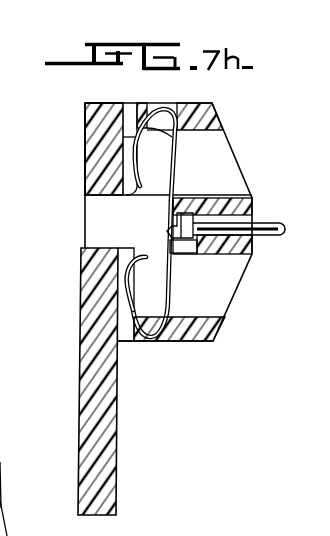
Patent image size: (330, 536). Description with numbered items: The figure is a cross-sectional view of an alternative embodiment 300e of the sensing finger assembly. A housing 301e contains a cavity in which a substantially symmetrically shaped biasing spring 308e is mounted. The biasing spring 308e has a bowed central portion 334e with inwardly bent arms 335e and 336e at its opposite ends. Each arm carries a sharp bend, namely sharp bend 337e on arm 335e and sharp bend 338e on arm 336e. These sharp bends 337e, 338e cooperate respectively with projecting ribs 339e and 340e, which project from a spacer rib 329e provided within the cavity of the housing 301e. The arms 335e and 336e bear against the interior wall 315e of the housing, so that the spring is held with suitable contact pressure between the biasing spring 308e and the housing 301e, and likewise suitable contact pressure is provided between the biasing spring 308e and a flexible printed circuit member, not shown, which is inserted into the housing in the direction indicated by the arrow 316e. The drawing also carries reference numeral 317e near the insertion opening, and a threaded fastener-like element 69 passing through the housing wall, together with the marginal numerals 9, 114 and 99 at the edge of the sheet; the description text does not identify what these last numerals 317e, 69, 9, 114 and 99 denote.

The sensing finger assembly embodiment 300e is at (268, 451).
The housing 301e is at (86, 172).
The arrow 316e is at (100, 111).
The inwardly bent arm 335e is at (136, 139).
The slot 317e is at (130, 112).
The interior wall 315e is at (121, 198).
The projecting rib 339e is at (153, 104).
The biasing spring 308e is at (173, 190).
The spacer rib 329e is at (126, 223).
The sharp bend 337e is at (172, 152).
The inwardly bent arm 336e is at (163, 305).
The sharp bend 338e is at (158, 309).
The projecting rib 340e is at (139, 346).
The bowed central portion 334e is at (167, 228).
The bolt 69 is at (279, 236).
The partial numeral 9 is at (4, 244).
The adjacent member 114 is at (0, 492).
The adjacent member 99 is at (27, 518).